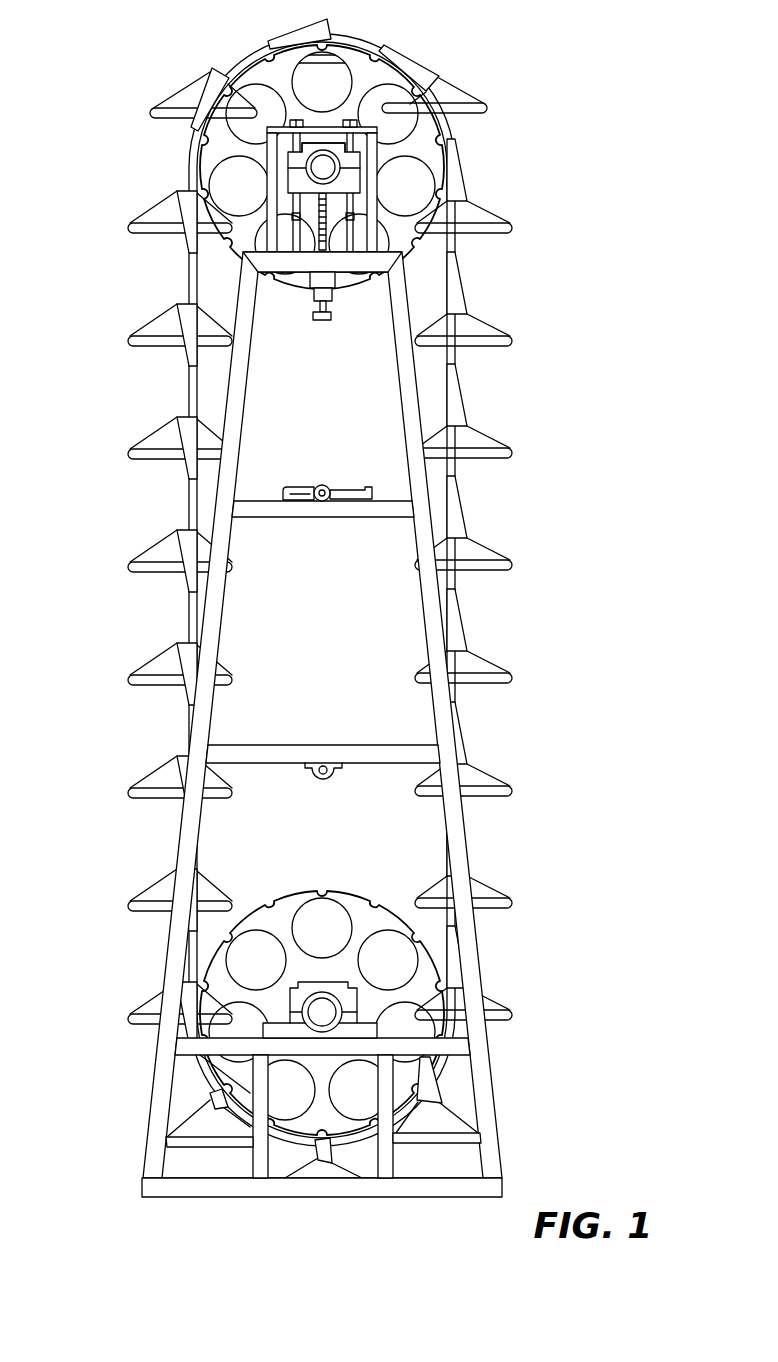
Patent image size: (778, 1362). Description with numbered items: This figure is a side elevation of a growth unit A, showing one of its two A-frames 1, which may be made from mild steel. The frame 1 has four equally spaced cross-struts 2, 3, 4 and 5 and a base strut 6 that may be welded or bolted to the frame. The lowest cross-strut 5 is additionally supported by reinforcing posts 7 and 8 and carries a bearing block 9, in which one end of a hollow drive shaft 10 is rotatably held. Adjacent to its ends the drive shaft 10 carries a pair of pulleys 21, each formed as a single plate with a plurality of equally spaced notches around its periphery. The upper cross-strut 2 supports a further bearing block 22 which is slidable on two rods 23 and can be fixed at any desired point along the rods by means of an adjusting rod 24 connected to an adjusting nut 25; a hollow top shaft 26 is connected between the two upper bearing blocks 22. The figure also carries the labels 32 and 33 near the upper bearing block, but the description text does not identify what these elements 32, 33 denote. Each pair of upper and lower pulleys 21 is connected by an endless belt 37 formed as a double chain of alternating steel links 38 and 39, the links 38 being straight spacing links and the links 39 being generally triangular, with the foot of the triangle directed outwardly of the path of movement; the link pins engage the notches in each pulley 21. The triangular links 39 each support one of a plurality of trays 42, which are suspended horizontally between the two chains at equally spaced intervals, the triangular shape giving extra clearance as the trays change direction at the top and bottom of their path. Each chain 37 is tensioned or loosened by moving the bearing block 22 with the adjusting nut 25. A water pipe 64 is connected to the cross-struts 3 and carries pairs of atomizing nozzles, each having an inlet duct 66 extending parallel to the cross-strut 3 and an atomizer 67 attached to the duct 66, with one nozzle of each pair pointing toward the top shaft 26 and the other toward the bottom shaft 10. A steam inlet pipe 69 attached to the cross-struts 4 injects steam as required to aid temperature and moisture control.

The growth unit A is at (126, 615).
The A-frame 1 is at (448, 726).
The cross-strut 2 is at (367, 262).
The cross-strut 3 is at (261, 509).
The cross-strut 4 is at (247, 756).
The cross-strut 5 is at (192, 1047).
The base strut 6 is at (205, 1189).
The reinforcing post 7 is at (256, 1161).
The reinforcing post 8 is at (388, 1161).
The bearing block 9 is at (351, 1000).
The hollow drive shaft 10 is at (317, 1007).
The pulley 21 is at (432, 128).
The bearing block 22 is at (350, 178).
The rod 23 is at (268, 228).
The adjusting rod 24 is at (314, 247).
The adjusting nut 25 is at (322, 322).
The top shaft 26 is at (315, 168).
The bearing cap 32 is at (323, 143).
The slide guide 33 is at (290, 186).
The endless belt 37 is at (455, 506).
The straight link 38 is at (455, 448).
The triangular link 39 is at (455, 395).
The tray 42 is at (160, 447).
The water pipe 64 is at (312, 487).
The inlet duct 66 is at (338, 486).
The atomizer 67 is at (368, 496).
The steam inlet pipe 69 is at (333, 775).